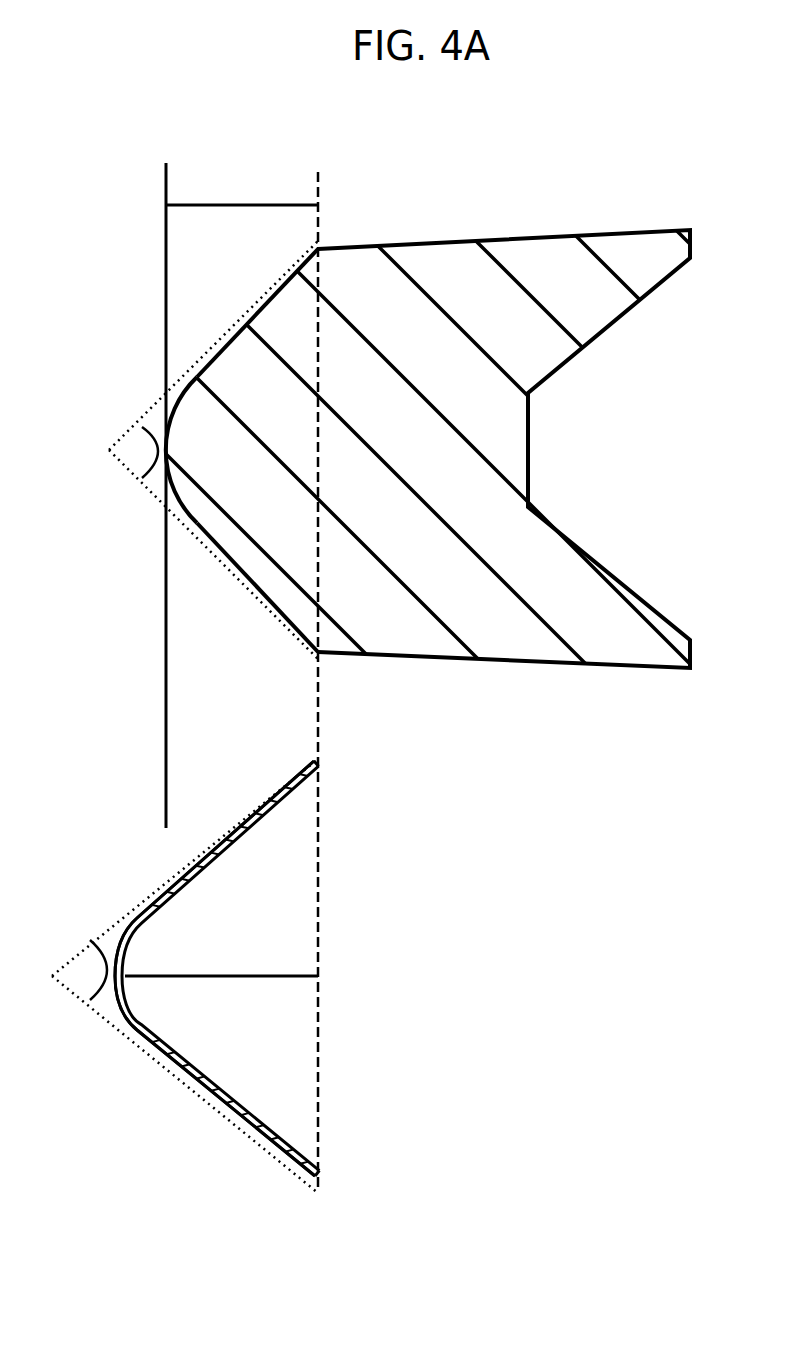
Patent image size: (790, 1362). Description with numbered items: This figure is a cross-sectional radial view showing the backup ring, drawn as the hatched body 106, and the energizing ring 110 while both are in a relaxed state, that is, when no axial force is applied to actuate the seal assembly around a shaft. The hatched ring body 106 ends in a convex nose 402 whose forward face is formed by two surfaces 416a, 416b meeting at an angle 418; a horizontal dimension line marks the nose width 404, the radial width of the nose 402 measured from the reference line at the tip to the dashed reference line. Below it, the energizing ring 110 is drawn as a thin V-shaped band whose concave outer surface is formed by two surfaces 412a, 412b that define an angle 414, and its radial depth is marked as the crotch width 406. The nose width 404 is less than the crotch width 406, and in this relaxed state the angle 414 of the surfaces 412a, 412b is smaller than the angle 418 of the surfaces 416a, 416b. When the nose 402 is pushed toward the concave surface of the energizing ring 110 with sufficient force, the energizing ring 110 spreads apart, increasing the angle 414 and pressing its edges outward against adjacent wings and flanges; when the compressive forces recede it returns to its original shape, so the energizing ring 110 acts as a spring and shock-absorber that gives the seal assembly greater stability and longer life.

The blade 106 is at (512, 667).
The energizing ring 110 is at (173, 1072).
The nose 402 is at (180, 507).
The nose width 404 is at (267, 204).
The crotch width 406 is at (258, 977).
The surface 412a is at (270, 818).
The surface 412b is at (263, 1117).
The angle 414 is at (92, 940).
The surface 416a is at (252, 313).
The surface 416b is at (248, 592).
The angle 418 is at (150, 420).